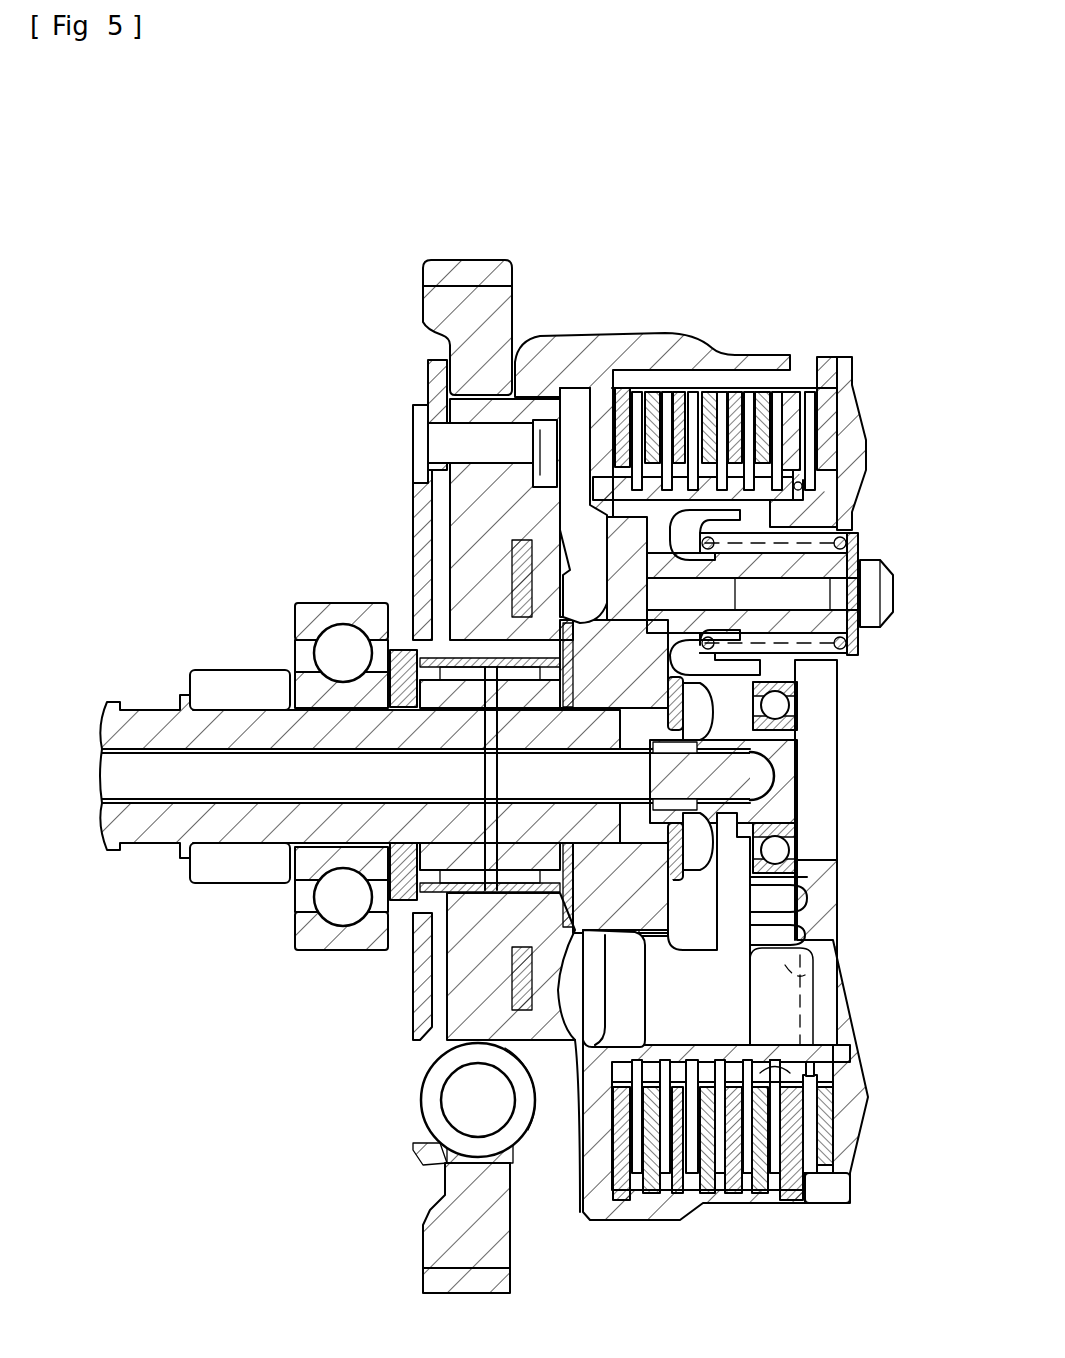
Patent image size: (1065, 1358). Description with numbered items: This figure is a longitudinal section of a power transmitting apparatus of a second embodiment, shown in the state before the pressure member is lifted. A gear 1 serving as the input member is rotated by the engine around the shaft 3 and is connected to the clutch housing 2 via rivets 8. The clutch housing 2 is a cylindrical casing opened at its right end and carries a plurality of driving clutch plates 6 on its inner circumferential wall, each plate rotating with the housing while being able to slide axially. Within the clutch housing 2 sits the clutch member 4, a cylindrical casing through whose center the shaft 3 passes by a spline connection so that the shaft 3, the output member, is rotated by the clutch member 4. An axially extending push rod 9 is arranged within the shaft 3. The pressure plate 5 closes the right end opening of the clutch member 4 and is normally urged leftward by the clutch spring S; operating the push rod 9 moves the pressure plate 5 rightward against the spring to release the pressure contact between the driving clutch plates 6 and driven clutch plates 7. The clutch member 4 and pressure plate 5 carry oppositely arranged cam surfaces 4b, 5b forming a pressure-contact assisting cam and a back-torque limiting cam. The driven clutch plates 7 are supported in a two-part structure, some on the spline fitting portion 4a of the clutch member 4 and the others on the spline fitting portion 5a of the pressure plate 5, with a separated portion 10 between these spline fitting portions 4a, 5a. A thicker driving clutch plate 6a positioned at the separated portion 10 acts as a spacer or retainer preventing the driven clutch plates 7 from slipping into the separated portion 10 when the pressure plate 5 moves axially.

The gear 1 is at (442, 312).
The clutch housing 2 is at (606, 342).
The shaft 3 is at (150, 715).
The clutch member 4 is at (598, 495).
The pressure plate 5 is at (858, 447).
The driving clutch plates 6 is at (758, 392).
The driving clutch plate 6a is at (790, 395).
The driven clutch plates 7 is at (693, 392).
The rivets 8 is at (418, 424).
The push rod 9 is at (163, 785).
The separated portion 10 is at (808, 493).
The clutch spring S is at (820, 650).
The cam surface 4b is at (830, 975).
The cam surface 5b is at (805, 1033).
The spline fitting portion 4a is at (760, 1073).
The spline fitting portion 5a is at (832, 1076).